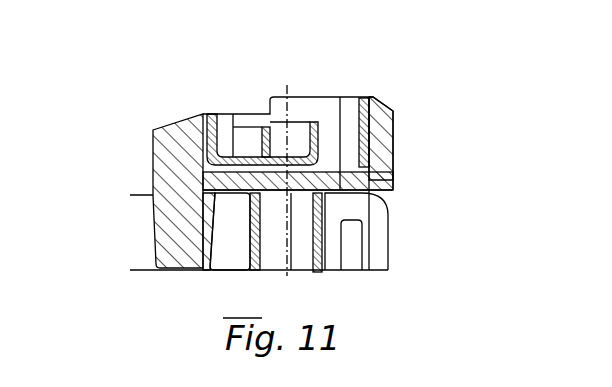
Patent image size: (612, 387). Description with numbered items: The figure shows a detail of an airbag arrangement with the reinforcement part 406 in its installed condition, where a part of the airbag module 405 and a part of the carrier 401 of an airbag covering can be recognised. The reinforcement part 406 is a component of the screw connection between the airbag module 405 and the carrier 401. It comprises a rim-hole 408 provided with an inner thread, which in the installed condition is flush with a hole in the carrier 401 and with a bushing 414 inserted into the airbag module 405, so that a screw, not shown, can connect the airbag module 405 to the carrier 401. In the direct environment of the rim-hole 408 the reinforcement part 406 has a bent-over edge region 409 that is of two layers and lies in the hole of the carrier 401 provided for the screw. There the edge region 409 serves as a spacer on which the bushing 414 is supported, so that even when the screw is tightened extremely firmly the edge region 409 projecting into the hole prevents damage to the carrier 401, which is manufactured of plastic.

The carrier 401 is at (164, 169).
The airbag module 405 is at (358, 210).
The reinforcement part 406 is at (364, 97).
The rim-hole 408 is at (323, 113).
The bent-over edge region 409 is at (345, 172).
The bushing 414 is at (317, 272).